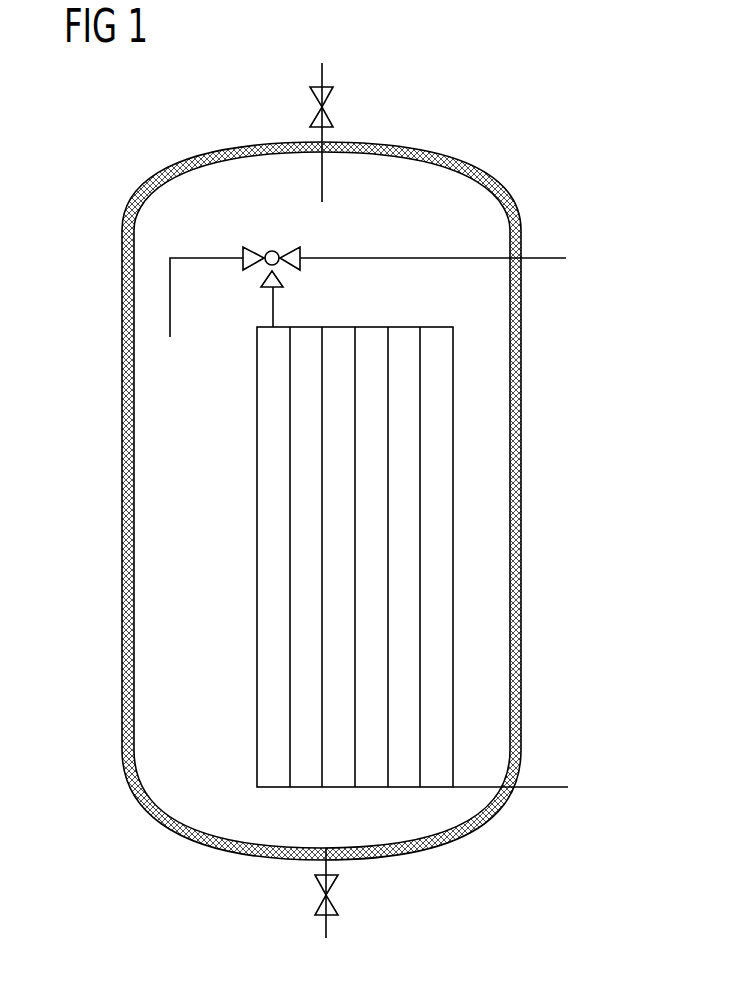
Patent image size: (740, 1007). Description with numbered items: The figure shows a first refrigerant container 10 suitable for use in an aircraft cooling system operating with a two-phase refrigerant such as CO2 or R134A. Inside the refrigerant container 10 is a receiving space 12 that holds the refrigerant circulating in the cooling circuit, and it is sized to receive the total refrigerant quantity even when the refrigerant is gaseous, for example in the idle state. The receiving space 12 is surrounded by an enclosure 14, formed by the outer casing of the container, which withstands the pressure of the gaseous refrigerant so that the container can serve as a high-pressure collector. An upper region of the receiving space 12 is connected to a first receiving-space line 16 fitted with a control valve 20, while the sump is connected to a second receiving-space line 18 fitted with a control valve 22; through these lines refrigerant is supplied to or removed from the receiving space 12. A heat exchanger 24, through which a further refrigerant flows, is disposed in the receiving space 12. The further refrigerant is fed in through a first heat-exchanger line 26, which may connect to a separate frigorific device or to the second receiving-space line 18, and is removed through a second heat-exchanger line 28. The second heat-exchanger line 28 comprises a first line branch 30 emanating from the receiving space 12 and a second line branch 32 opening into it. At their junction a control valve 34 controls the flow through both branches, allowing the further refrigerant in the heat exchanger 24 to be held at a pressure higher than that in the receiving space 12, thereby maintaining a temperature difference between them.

The refrigerant container 10 is at (567, 326).
The receiving space 12 is at (152, 492).
The enclosure 14 is at (522, 455).
The first receiving-space line 16 is at (326, 185).
The second receiving-space line 18 is at (323, 929).
The control valve 20 is at (337, 103).
The control valve 22 is at (337, 897).
The heat exchanger 24 is at (265, 388).
The first heat-exchanger line 26 is at (545, 784).
The second heat-exchanger line 28 is at (276, 306).
The first line branch 30 is at (543, 257).
The second line branch 32 is at (172, 310).
The control valve 34 is at (268, 251).